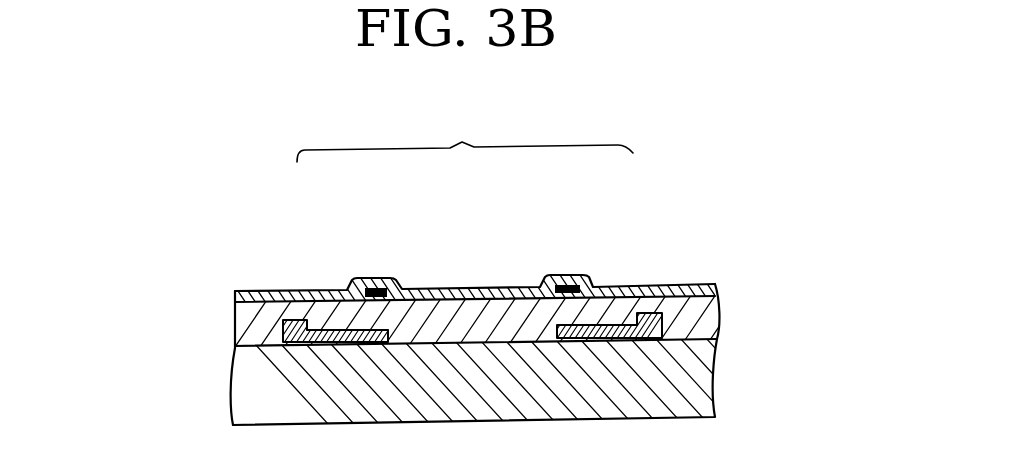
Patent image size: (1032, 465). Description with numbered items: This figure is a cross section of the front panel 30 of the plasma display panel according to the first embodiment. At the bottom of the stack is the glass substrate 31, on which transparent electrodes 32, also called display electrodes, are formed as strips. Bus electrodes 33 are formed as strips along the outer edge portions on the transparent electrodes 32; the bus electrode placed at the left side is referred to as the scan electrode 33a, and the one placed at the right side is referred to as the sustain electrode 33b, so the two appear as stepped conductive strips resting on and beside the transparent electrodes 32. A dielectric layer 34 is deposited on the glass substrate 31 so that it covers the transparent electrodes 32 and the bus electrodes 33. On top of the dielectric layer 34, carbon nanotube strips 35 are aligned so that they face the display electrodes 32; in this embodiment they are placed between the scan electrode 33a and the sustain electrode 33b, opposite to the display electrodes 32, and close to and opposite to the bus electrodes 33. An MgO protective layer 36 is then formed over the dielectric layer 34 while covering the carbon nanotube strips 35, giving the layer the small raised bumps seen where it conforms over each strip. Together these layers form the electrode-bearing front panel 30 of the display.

The front panel 30 is at (720, 248).
The glass substrate 31 is at (243, 391).
The transparent electrodes 32 is at (348, 327).
The bus electrodes 33 is at (465, 136).
The scan electrodes 33a is at (299, 319).
The sustain electrodes 33b is at (650, 312).
The dielectric layer 34 is at (243, 323).
The carbon nanotube strips 35 is at (376, 278).
The MgO protective layer 36 is at (475, 289).